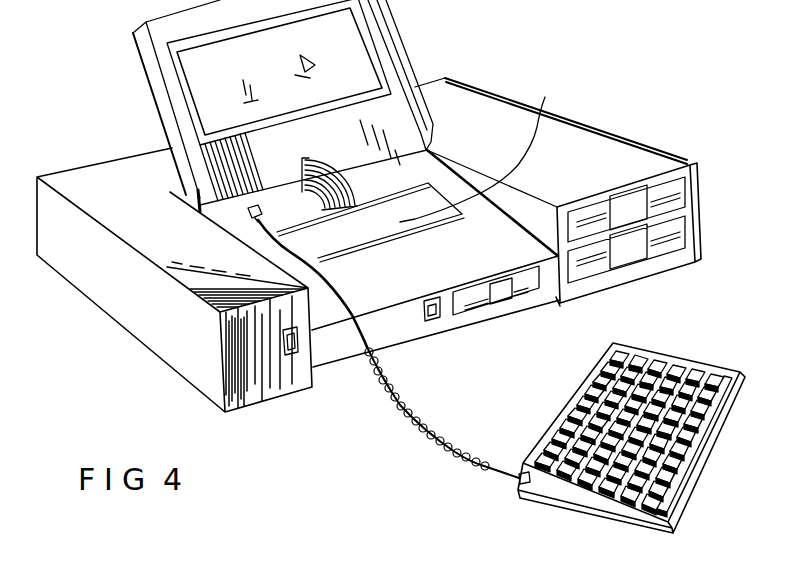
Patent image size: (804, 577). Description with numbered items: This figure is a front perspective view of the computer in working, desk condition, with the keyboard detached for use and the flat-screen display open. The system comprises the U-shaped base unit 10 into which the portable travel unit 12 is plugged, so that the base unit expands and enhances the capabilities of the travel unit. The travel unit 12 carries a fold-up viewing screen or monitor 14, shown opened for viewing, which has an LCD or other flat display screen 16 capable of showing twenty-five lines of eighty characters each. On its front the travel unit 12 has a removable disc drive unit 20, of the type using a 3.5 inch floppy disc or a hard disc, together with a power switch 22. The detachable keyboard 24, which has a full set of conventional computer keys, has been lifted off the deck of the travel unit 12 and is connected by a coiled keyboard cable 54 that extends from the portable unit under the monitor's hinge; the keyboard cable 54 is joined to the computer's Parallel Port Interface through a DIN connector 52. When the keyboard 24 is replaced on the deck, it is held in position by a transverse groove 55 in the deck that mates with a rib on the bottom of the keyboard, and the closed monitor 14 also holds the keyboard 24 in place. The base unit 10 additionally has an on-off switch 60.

The base unit 10 is at (105, 326).
The travel unit 12 is at (357, 363).
The fold-up viewing screen or monitor 14 is at (146, 62).
The flat display screen 16 is at (347, 40).
The removable disc drive unit 20 is at (527, 293).
The power switch 22 is at (432, 322).
The detachable keyboard 24 is at (552, 499).
The DIN connector 52 is at (262, 209).
The coiled keyboard cable 54 is at (406, 410).
The transverse groove 55 is at (480, 147).
The on-off switch 60 is at (290, 354).